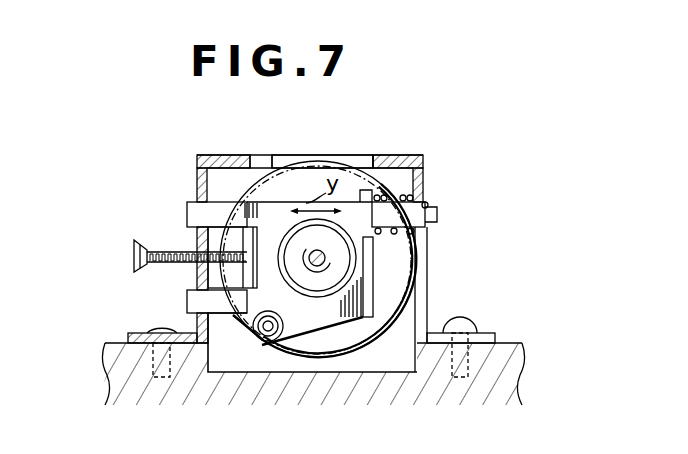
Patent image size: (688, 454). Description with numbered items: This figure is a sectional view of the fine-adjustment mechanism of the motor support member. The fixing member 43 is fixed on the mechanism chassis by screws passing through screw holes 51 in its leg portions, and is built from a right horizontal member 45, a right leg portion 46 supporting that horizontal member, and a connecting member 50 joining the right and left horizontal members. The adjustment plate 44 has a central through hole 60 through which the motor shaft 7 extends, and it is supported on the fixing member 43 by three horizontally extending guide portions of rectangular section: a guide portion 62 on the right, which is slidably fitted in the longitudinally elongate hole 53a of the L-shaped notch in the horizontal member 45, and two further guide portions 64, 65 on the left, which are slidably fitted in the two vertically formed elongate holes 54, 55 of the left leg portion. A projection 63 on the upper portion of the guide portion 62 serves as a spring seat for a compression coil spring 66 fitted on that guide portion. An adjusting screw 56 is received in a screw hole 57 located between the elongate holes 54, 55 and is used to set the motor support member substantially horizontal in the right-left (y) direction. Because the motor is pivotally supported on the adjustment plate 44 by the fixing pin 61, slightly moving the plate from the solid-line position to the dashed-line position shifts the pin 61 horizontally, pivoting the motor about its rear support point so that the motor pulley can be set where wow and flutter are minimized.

The motor shaft 7 is at (305, 264).
The fixing member 43 is at (390, 152).
The adjustment plate 44 is at (290, 194).
The right horizontal member 45 is at (428, 155).
The right leg portion 46 is at (426, 277).
The connecting member 50 is at (284, 155).
The screw hole 51 is at (178, 333).
The elongate hole 53a is at (430, 203).
The elongate hole 54 is at (198, 208).
The elongate hole 55 is at (231, 315).
The adjusting screw 56 is at (133, 250).
The screw hole 57 is at (198, 258).
The through hole 60 is at (323, 298).
The fixing pin 61 is at (270, 342).
The guide portion 62 is at (437, 212).
The projection 63 is at (400, 200).
The guide portion 64 is at (188, 210).
The guide portion 65 is at (198, 298).
The compression coil spring 66 is at (415, 232).